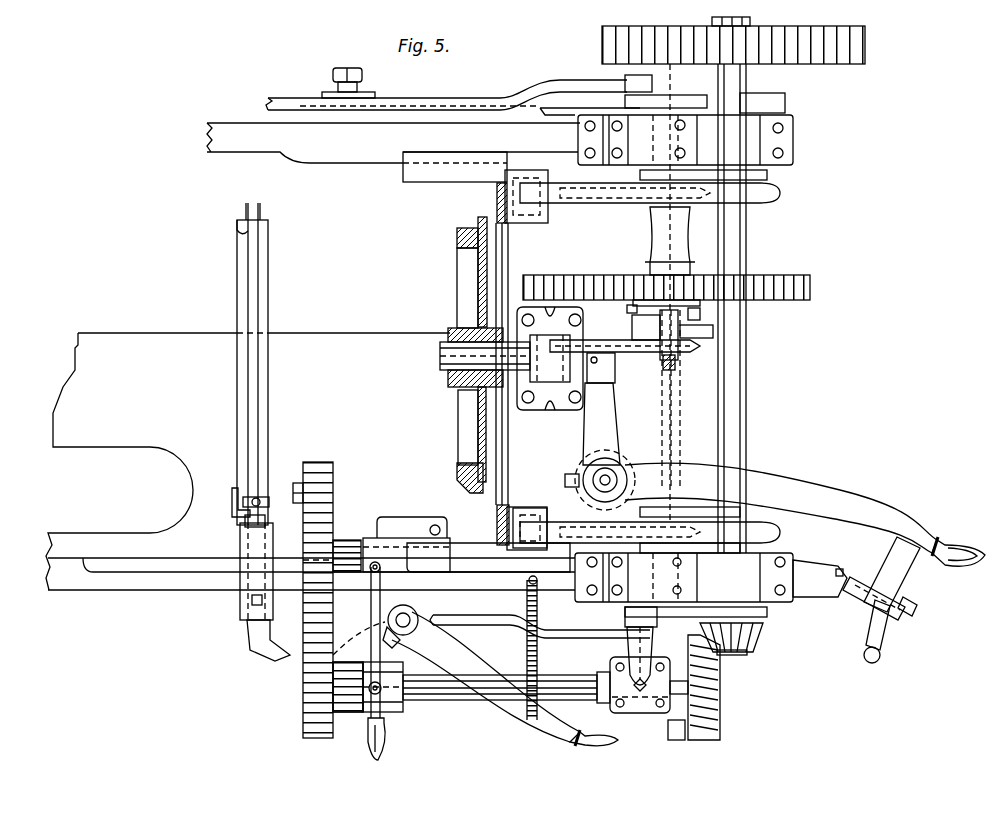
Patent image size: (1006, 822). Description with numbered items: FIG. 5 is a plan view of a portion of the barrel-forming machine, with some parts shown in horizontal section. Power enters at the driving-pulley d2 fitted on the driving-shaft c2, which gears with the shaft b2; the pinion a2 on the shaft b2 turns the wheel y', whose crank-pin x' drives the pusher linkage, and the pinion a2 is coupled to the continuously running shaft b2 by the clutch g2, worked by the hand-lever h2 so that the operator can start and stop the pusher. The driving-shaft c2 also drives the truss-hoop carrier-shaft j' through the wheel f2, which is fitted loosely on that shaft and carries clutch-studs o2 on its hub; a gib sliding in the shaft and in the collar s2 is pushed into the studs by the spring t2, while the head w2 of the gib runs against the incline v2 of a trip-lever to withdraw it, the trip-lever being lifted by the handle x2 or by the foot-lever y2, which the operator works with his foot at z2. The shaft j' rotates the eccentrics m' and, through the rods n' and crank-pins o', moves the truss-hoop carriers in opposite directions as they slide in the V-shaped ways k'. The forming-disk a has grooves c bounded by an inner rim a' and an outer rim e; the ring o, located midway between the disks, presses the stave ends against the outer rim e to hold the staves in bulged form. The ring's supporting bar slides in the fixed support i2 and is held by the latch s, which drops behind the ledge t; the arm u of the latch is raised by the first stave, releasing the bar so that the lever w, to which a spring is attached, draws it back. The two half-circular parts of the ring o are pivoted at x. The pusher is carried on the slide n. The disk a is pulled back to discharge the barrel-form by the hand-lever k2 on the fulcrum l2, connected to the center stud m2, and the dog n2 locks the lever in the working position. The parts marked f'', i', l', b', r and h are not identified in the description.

The driving-pulley d2 is at (748, 40).
The driving-shaft c2 is at (723, 308).
The rods n' is at (459, 88).
The crank-pins o' is at (636, 387).
The pin f'' is at (690, 74).
The pivot i' is at (634, 303).
The V-shaped ways k' is at (676, 105).
The lever l' is at (650, 204).
The eccentrics m' is at (726, 363).
The driving-wheel f2 is at (666, 279).
The bearing block b' is at (505, 359).
The forming-disk a is at (463, 355).
The inner rim a' is at (441, 351).
The grooves c is at (462, 228).
The outer rim e is at (472, 228).
The center shaft or stud m2 is at (469, 357).
The fulcrum l2 is at (604, 446).
The dog n2 is at (753, 508).
The truss-hoop carrier-shaft j' is at (639, 406).
The hand-lever k2 is at (805, 514).
The clutch g2 is at (680, 378).
The collar s2 is at (665, 324).
The clutch-studs o2 is at (662, 305).
The spring t2 is at (620, 334).
The handle x2 is at (709, 348).
The head of the gib w2 is at (662, 361).
The incline v2 is at (649, 368).
The foot-lever operating point z2 is at (703, 684).
The foot-lever y2 is at (649, 646).
The shaft b2 is at (545, 698).
The spring r is at (539, 648).
The slide n is at (540, 623).
The lever w is at (500, 675).
The wheel y' is at (328, 600).
The crank-pin x' is at (297, 474).
The pinion a2 is at (300, 700).
The hand-lever h2 is at (382, 756).
The ring o is at (252, 364).
The support i2 is at (273, 600).
The arm u is at (231, 501).
The pivot x is at (263, 489).
The shoulder or ledge t is at (279, 506).
The lug h is at (288, 516).
The latch s is at (244, 522).